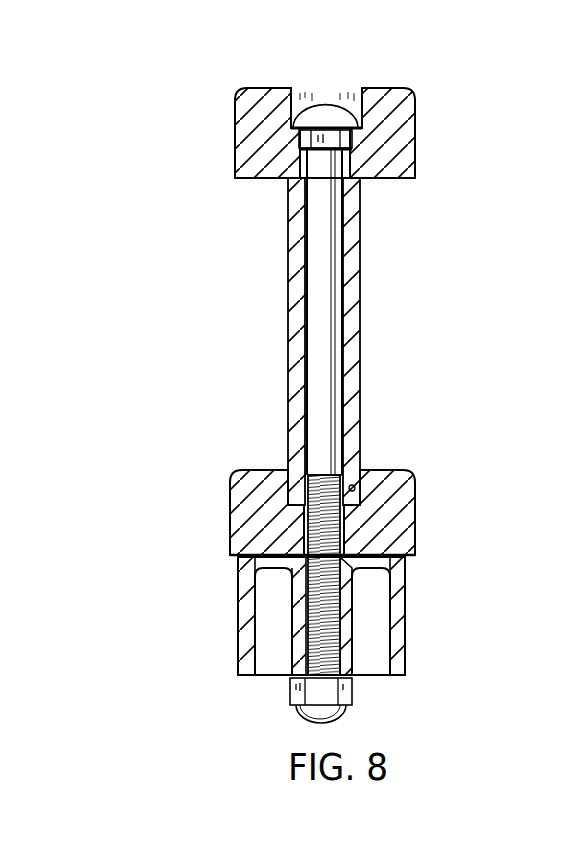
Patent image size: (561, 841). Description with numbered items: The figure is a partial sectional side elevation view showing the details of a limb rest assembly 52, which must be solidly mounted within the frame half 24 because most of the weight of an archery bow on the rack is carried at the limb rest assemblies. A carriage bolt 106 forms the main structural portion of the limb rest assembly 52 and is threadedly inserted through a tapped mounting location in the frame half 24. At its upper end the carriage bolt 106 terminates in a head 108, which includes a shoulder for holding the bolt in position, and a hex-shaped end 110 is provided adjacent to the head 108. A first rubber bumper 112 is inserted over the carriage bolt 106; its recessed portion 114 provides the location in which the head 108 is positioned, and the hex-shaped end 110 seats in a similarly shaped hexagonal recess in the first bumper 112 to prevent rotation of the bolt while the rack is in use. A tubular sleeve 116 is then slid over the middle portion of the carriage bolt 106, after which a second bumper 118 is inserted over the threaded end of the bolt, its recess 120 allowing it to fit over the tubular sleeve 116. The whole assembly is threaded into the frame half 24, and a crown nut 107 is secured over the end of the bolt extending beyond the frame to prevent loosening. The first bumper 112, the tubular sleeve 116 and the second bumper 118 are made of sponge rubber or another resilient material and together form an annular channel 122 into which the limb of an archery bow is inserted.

The frame half 24 is at (410, 588).
The limb rest assembly 52 is at (462, 180).
The carriage bolt 106 is at (330, 358).
The crown nut 107 is at (312, 712).
The head 108 is at (331, 112).
The hex-shaped end 110 is at (353, 150).
The first rubber bumper 112 is at (398, 112).
The recessed portion 114 is at (330, 92).
The tubular sleeve 116 is at (356, 272).
The second bumper 118 is at (400, 497).
The recess 120 is at (362, 482).
The annular channel 122 is at (247, 180).